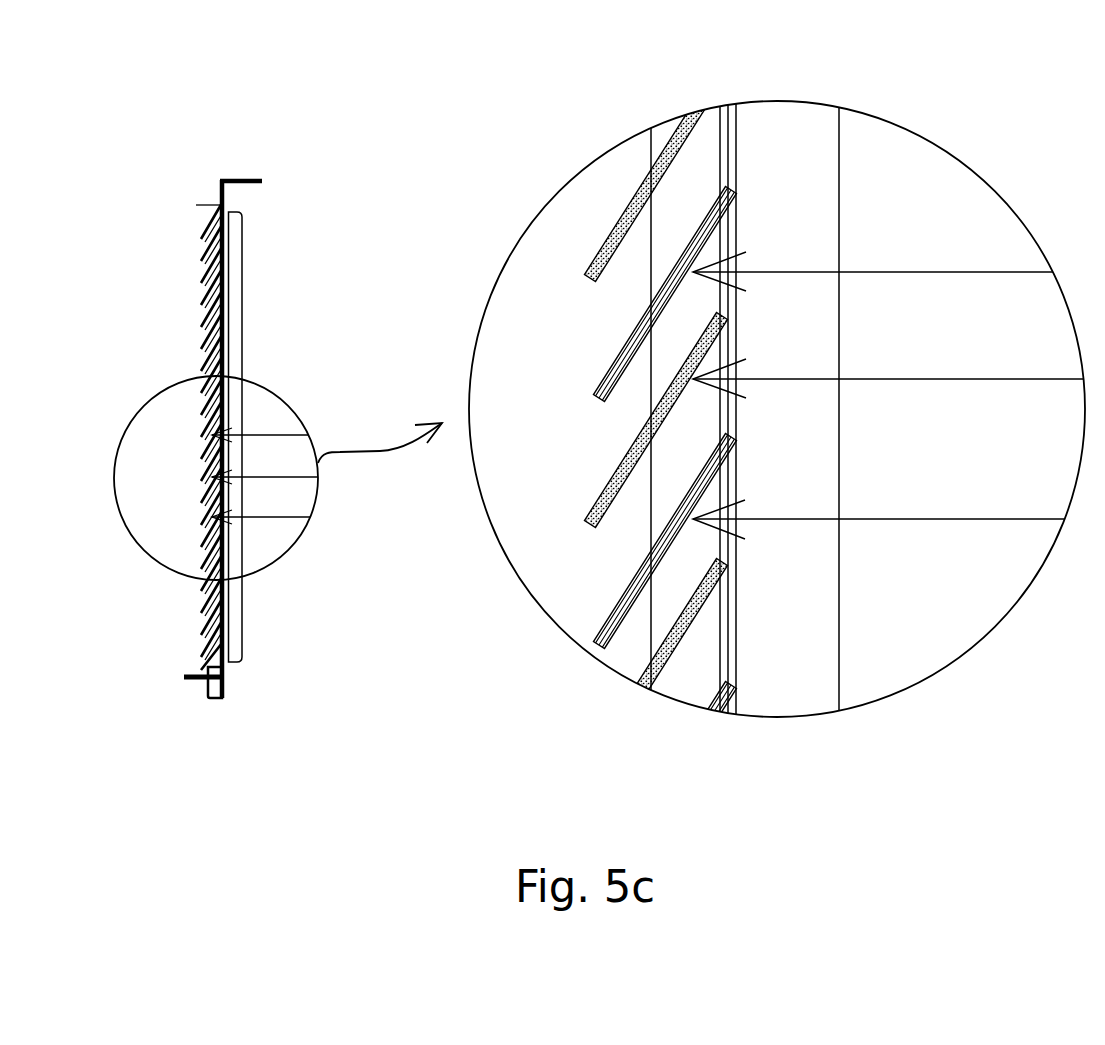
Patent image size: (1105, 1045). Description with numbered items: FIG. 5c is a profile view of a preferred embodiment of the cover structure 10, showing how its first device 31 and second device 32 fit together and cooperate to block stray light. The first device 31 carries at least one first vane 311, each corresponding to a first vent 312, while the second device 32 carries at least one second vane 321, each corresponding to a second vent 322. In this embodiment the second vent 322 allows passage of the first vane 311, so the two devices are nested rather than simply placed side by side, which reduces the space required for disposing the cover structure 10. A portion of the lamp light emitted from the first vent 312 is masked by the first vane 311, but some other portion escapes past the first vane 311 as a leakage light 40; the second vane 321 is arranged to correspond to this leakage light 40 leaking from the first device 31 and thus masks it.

The cover structure 10 is at (322, 125).
The first device 31 is at (260, 184).
The second device 32 is at (239, 179).
The first vane 311 is at (203, 462).
The first vent 312 is at (224, 305).
The second vane 321 is at (205, 434).
The second vent 322 is at (225, 333).
The leakage light 40 is at (656, 396).